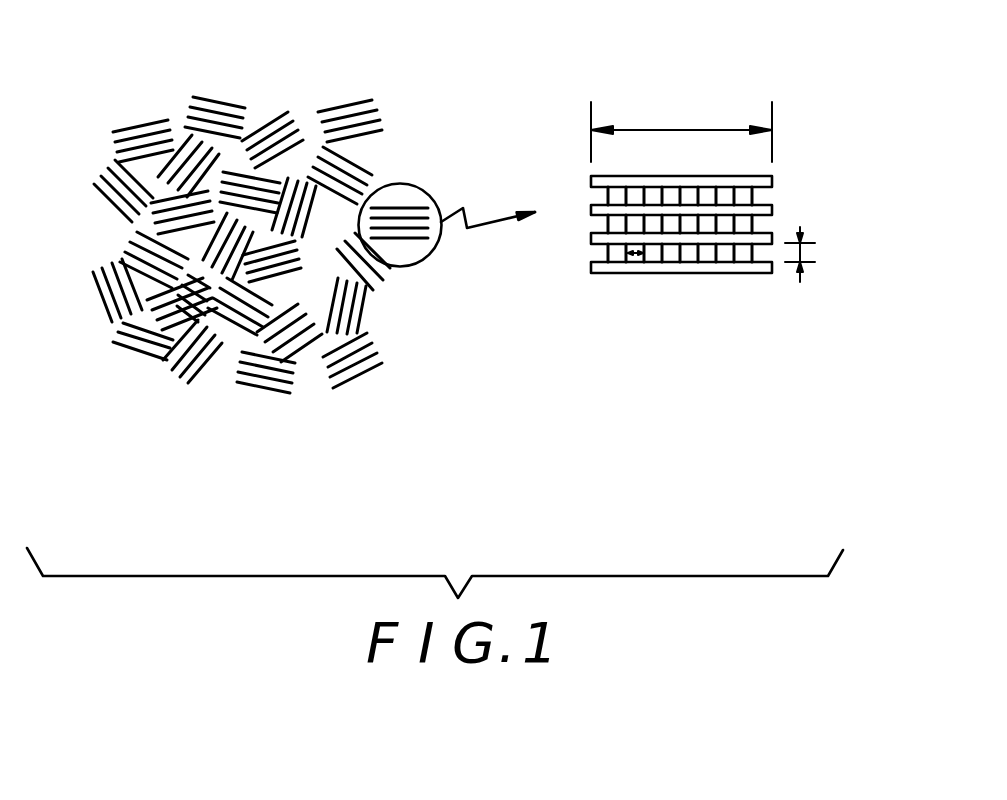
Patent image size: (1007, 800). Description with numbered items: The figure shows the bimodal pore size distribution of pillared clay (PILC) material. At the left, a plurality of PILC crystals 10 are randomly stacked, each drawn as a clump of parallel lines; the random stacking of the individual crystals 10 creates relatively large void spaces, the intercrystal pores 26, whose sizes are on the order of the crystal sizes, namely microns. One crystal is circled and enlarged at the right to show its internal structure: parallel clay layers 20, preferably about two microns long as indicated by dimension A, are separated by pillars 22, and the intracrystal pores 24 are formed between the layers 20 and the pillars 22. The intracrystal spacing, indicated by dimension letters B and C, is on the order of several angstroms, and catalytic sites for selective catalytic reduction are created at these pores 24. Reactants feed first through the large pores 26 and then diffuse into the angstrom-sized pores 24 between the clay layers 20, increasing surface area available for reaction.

The PILC crystal 10 is at (410, 185).
The clay layer 20 is at (120, 326).
The pillar 22 is at (753, 197).
The intracrystal pore 24 is at (728, 225).
The intercrystal pore 26 is at (306, 157).
The clay layer length dimension A is at (658, 124).
The intracrystal dimension B is at (805, 252).
The intracrystal dimension C is at (637, 258).